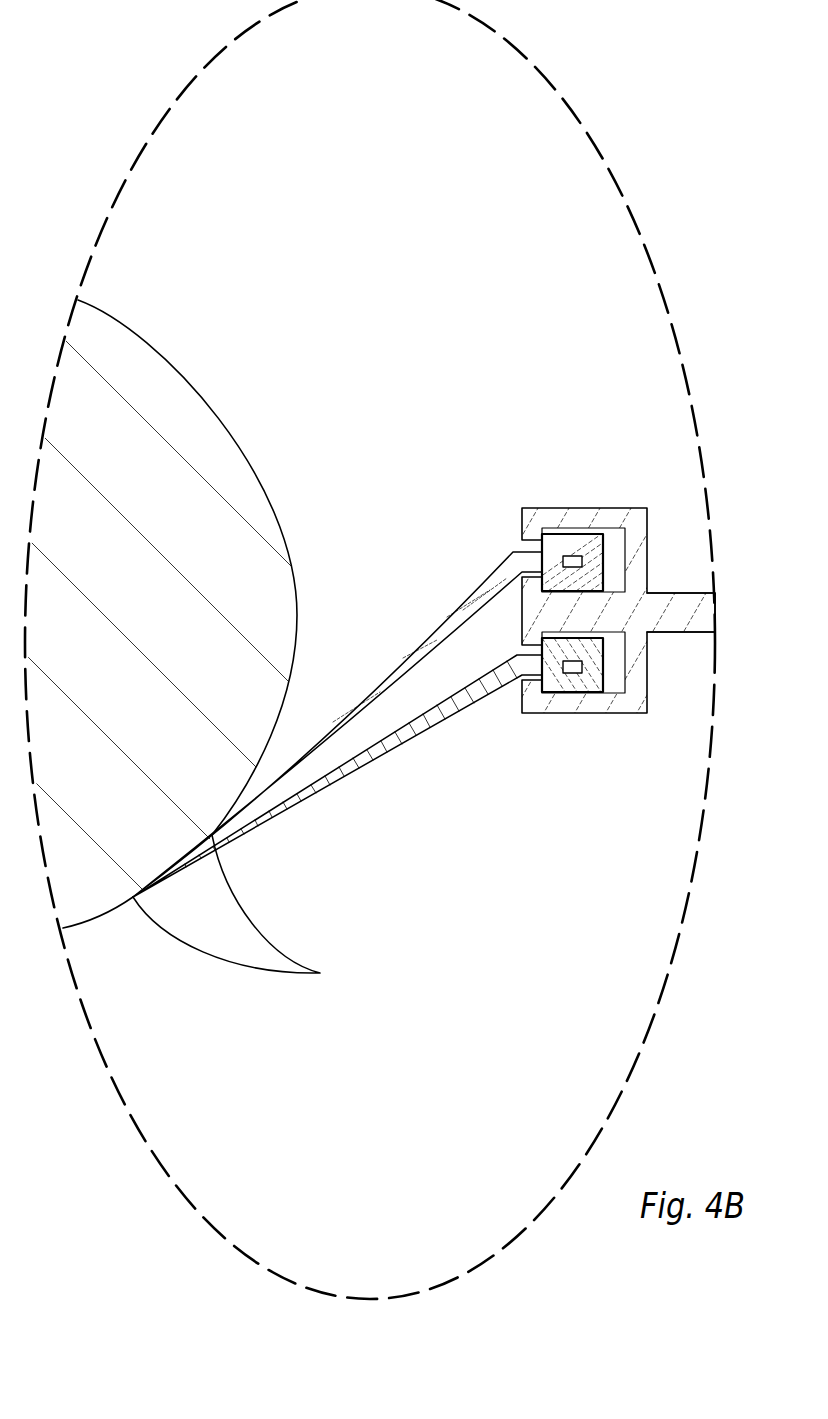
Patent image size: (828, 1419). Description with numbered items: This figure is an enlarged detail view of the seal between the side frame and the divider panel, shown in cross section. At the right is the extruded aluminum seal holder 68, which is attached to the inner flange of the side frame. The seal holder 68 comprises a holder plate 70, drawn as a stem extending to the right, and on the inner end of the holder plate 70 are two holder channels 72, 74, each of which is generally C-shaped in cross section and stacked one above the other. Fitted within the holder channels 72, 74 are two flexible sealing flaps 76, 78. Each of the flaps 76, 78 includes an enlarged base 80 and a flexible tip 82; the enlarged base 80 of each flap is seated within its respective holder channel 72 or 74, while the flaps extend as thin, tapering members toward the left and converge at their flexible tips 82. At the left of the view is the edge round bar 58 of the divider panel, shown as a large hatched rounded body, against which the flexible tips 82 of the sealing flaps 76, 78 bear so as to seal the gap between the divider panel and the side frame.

The edge round bar 58 is at (297, 605).
The seal holder 68 is at (631, 491).
The holder plate 70 is at (704, 592).
The holder channel 72 is at (570, 512).
The holder channel 74 is at (592, 708).
The flexible sealing flap 76 is at (438, 628).
The flexible sealing flap 78 is at (398, 742).
The enlarged base 80 is at (597, 669).
The flexible tip 82 is at (242, 913).